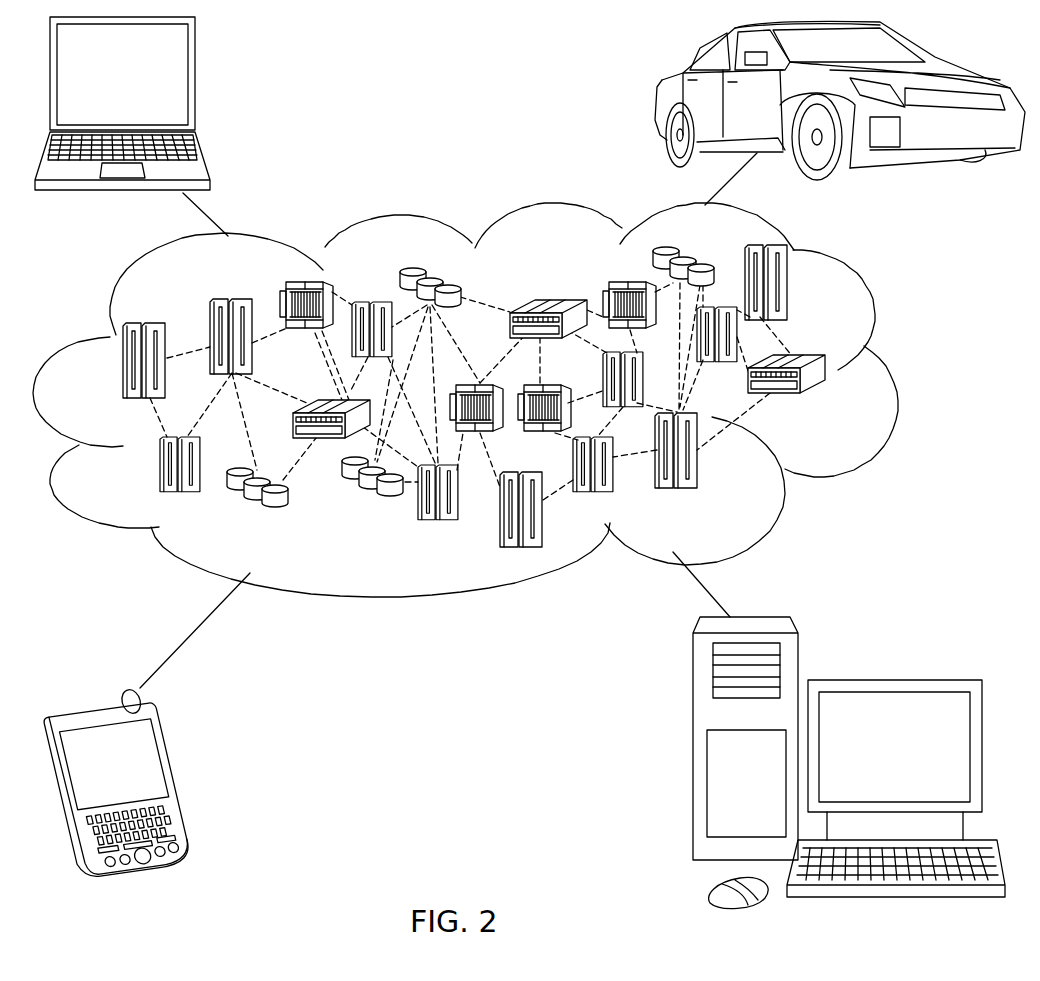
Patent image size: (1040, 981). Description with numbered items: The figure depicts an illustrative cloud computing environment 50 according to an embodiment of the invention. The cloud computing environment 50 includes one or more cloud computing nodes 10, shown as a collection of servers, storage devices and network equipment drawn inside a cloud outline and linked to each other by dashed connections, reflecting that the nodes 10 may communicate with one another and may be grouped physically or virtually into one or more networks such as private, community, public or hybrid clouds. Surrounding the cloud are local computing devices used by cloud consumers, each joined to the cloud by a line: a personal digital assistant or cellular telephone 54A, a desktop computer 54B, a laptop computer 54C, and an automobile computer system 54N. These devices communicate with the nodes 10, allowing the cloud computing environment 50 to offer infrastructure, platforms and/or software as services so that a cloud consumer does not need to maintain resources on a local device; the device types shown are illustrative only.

The cloud computing node 10 is at (840, 400).
The cloud computing environment 50 is at (893, 372).
The personal digital assistant or cellular telephone 54A is at (185, 777).
The desktop computer 54B is at (893, 680).
The laptop computer 54C is at (195, 82).
The automobile computer system 54N is at (660, 97).